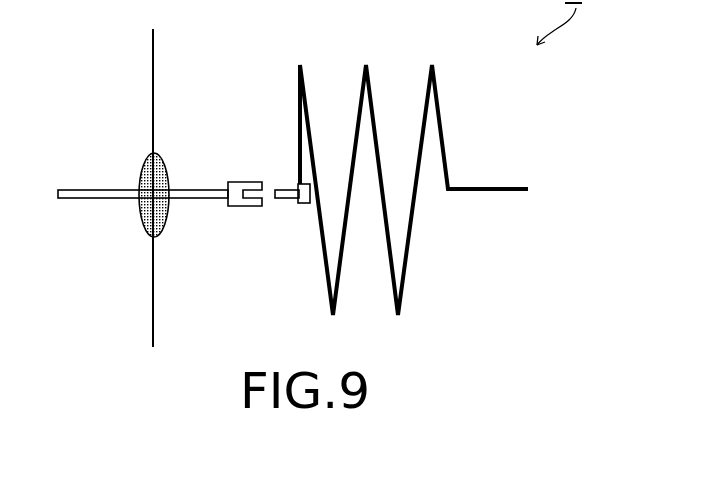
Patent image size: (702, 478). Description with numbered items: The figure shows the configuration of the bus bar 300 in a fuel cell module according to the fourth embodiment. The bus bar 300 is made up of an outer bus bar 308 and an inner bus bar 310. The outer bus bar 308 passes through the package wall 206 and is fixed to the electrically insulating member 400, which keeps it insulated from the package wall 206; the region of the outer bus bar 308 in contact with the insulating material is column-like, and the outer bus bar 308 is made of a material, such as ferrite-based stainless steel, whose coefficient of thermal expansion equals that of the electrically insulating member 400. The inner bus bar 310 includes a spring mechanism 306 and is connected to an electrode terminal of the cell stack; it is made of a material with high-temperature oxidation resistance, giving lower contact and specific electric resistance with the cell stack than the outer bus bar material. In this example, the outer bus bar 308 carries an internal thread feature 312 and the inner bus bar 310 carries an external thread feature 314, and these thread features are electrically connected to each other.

The package wall 206 is at (153, 52).
The outer bus bar 308 is at (86, 185).
The electrically insulating member 400 is at (148, 233).
The internal thread feature 312 is at (247, 208).
The external thread feature 314 is at (304, 205).
The spring mechanism 306 is at (440, 118).
The inner bus bar 310 is at (490, 198).
The bus bar 300 is at (467, 282).